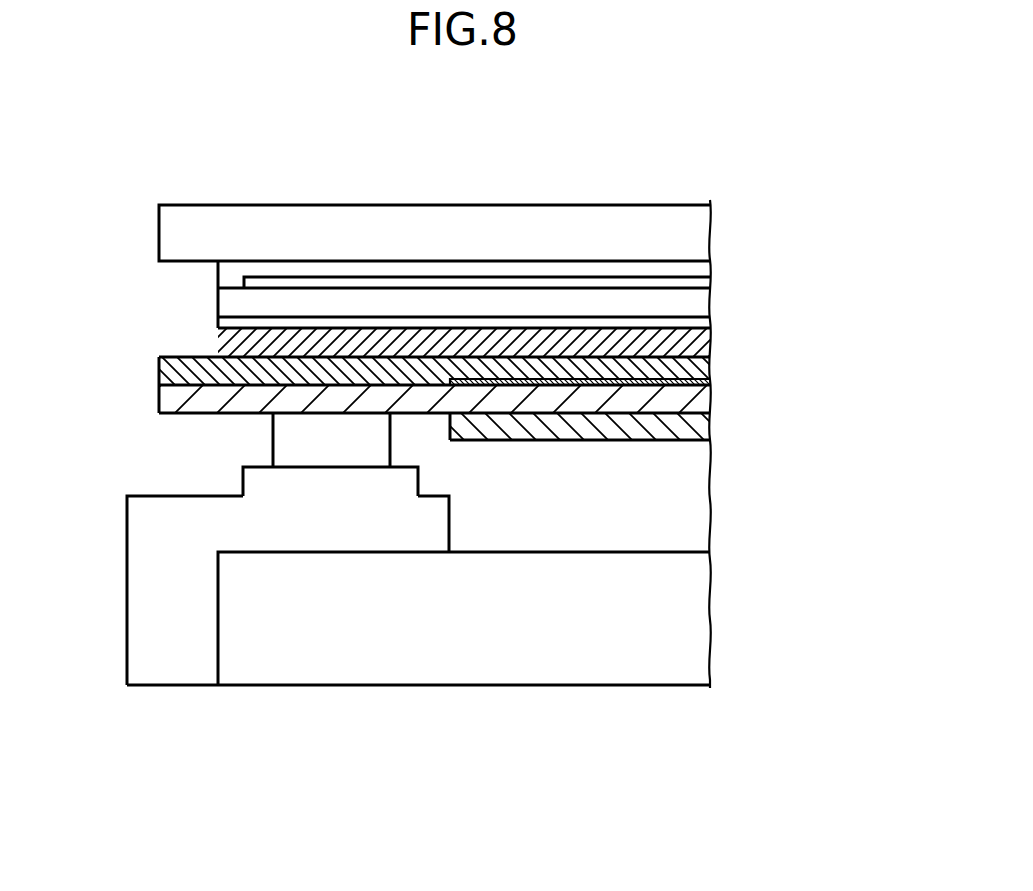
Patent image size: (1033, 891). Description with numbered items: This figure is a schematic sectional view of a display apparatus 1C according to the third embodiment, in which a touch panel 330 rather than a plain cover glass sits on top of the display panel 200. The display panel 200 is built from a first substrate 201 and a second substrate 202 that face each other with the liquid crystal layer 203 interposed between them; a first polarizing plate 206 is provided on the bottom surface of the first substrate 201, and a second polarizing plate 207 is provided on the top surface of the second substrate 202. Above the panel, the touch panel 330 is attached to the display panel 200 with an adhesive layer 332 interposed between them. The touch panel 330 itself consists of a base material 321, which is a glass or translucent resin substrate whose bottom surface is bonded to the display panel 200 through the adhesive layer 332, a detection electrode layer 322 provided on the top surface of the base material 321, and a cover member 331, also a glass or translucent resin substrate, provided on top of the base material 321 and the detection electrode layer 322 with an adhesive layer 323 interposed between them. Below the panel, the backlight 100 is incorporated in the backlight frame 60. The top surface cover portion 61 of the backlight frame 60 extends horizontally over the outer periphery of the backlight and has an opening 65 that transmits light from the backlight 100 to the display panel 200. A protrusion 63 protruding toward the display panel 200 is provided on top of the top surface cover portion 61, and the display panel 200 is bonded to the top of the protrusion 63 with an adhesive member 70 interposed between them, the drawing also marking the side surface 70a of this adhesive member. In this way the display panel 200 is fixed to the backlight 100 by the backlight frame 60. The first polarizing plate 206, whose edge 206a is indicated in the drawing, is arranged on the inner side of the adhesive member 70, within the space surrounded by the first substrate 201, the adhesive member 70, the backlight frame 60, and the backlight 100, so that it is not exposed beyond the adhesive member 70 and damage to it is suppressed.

The display apparatus 1C is at (752, 162).
The touch panel 330 is at (803, 203).
The cover member 331 is at (698, 232).
The adhesive layer 323 is at (698, 268).
The detection electrode layer 322 is at (698, 282).
The base material 321 is at (698, 303).
The adhesive layer 332 is at (516, 323).
The display panel 200 is at (803, 328).
The second polarizing plate 207 is at (698, 343).
The second substrate 202 is at (698, 368).
The first substrate 201 is at (698, 402).
The liquid crystal layer 203 is at (698, 386).
The first polarizing plate 206 is at (698, 432).
The side surface of electrode 206a is at (450, 432).
The adhesive member 70 is at (328, 442).
The side surface of wiring 70a is at (391, 442).
The backlight frame 60 is at (127, 578).
The protrusion 63 is at (257, 467).
The top surface cover portion 61 is at (167, 495).
The opening 65 is at (696, 503).
The backlight 100 is at (434, 697).